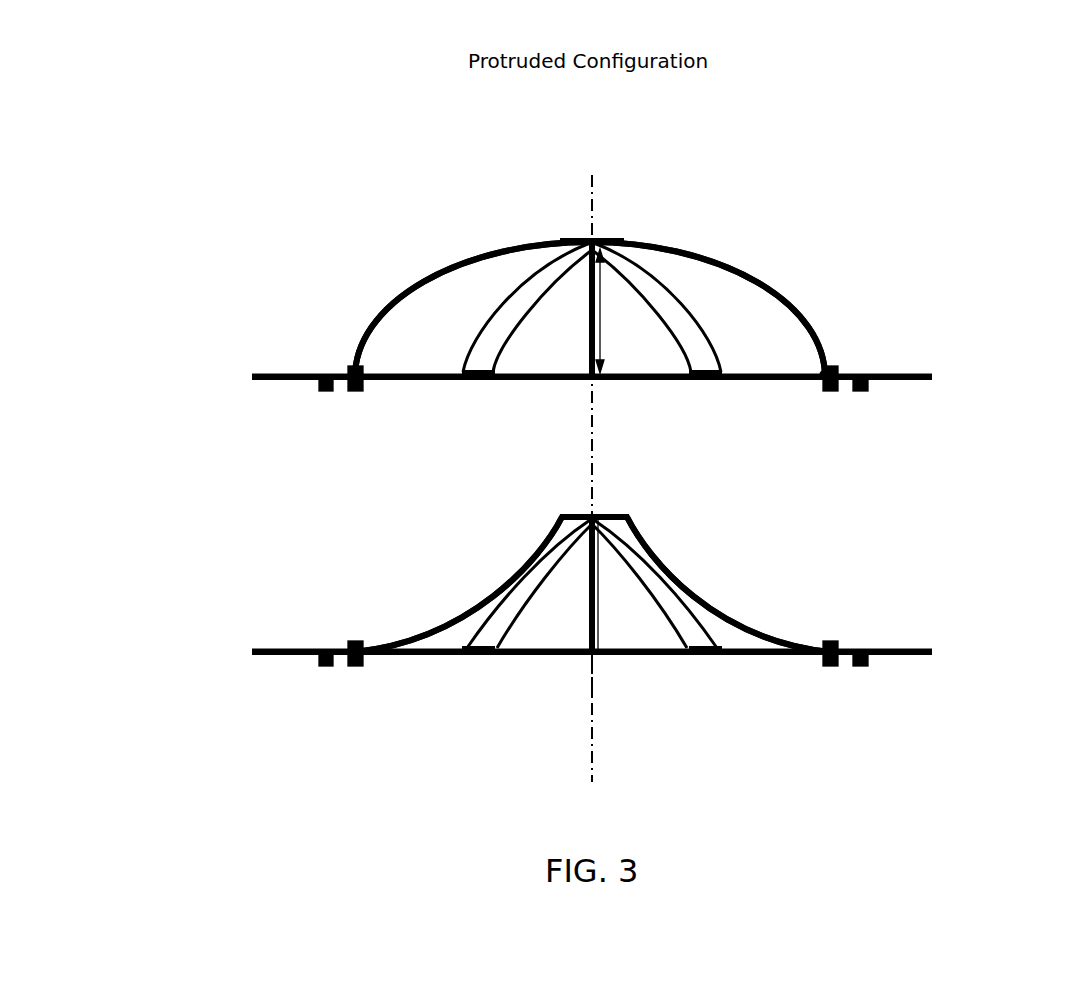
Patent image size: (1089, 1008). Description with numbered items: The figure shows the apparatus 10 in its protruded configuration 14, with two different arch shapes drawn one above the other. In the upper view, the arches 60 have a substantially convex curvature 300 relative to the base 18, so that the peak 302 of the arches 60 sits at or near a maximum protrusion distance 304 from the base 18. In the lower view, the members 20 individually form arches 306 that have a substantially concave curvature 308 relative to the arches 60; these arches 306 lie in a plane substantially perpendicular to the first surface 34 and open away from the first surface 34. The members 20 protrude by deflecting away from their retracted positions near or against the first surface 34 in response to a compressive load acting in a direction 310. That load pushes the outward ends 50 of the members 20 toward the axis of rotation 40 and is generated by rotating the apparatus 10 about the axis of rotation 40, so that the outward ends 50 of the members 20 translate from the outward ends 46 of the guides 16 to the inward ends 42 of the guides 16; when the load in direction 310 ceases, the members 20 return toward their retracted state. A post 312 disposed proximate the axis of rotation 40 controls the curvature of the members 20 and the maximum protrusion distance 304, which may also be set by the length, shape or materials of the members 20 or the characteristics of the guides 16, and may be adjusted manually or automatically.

The apparatus 10 is at (220, 378).
The protruded configuration 14 is at (591, 89).
The guides 16 is at (312, 398).
The base 18 is at (938, 377).
The members 20 is at (753, 291).
The first surface 34 is at (915, 372).
The axis of rotation 40 is at (596, 684).
The inward ends 42 is at (354, 393).
The outward ends 46 is at (325, 394).
The outward ends 50 is at (349, 367).
The arches 60 is at (432, 287).
The convex curvature 300 is at (707, 309).
The peak 302 is at (568, 236).
The maximum protrusion distance 304 is at (599, 314).
The arches 306 is at (488, 592).
The concave curvature 308 is at (706, 584).
The direction 310 is at (522, 747).
The post 312 is at (587, 337).